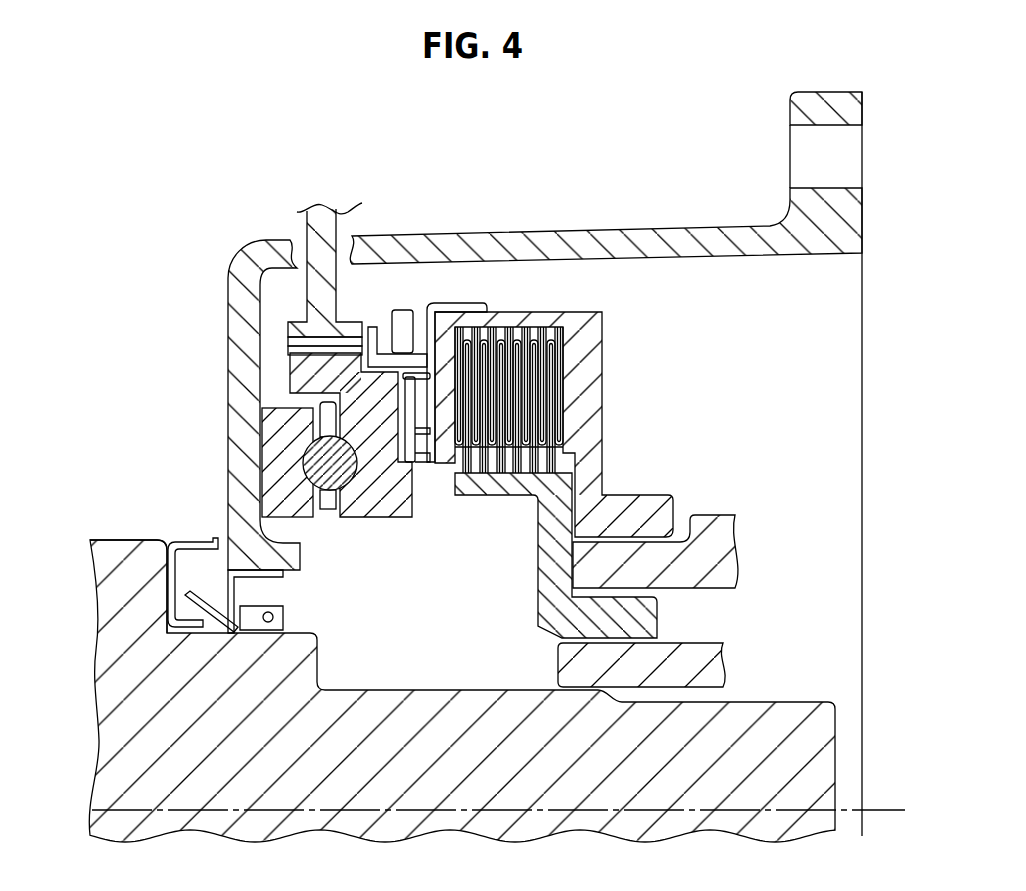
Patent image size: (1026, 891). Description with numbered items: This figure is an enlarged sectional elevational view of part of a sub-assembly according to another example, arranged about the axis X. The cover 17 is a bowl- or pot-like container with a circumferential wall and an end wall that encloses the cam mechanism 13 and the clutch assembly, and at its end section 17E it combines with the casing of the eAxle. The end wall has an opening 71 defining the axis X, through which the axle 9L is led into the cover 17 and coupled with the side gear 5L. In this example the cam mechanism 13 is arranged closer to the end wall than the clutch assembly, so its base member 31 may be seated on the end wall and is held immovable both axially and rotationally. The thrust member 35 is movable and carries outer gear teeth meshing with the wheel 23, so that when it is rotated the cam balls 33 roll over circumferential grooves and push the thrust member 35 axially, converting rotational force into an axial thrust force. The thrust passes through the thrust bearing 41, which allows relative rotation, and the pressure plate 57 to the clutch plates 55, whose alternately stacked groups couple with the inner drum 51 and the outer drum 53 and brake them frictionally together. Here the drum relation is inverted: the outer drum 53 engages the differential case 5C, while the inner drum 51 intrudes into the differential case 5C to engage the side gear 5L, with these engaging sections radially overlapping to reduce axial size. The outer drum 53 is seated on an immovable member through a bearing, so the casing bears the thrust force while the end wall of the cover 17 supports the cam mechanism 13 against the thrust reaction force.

The differential case 5C is at (713, 515).
The side gear 5L is at (725, 668).
The axle 9L is at (113, 622).
The cam mechanism 13 is at (380, 586).
The cover 17 is at (228, 352).
The end section 17E is at (862, 226).
The wheel 23 is at (337, 215).
The base member 31 is at (305, 520).
The cam balls 33 is at (328, 506).
The thrust member 35 is at (385, 520).
The thrust bearing 41 is at (421, 303).
The inner drum 51 is at (538, 572).
The outer drum 53 is at (602, 396).
The clutch plates 55 is at (525, 310).
The pressure plate 57 is at (447, 471).
The opening 71 is at (176, 543).
The axis X is at (878, 803).